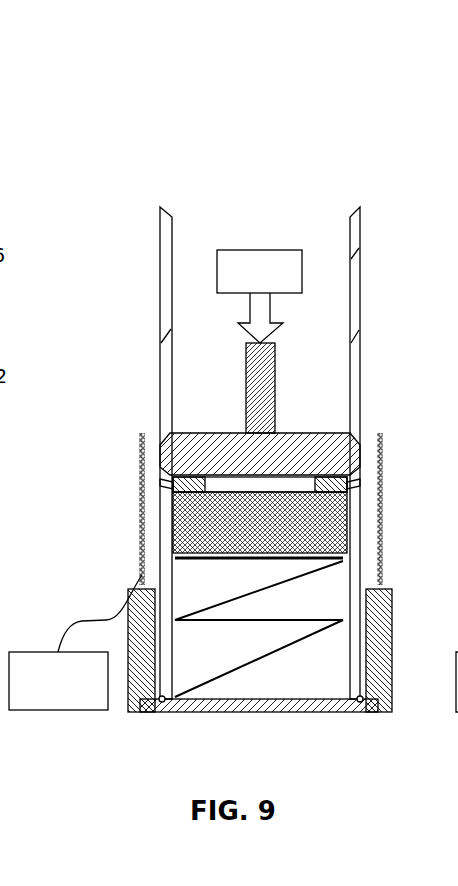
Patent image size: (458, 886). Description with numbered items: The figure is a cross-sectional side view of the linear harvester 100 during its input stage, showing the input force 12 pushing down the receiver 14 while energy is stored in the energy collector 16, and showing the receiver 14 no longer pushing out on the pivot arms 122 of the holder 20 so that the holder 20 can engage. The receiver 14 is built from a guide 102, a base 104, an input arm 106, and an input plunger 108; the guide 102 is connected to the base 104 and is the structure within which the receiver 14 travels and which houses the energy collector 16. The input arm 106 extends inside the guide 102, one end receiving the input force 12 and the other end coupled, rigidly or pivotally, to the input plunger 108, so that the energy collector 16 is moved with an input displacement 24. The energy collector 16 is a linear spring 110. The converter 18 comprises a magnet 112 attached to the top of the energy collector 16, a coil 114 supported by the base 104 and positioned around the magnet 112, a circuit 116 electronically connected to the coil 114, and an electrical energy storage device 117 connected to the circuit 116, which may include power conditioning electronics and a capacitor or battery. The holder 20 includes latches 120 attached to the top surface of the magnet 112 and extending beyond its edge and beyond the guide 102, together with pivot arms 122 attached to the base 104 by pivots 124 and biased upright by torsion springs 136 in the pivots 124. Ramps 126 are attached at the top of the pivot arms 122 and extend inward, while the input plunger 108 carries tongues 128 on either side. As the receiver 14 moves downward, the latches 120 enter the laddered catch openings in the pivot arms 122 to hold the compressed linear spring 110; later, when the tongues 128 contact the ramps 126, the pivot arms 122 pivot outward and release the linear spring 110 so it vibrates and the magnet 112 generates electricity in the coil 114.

The linear harvester 100 is at (212, 158).
The receiver 14 is at (331, 208).
The input force 12 is at (260, 262).
The input displacement 24 is at (252, 302).
The guide 102 is at (348, 298).
The ramps 126 is at (352, 247).
The pivot arms 122 is at (363, 398).
The holder 20 is at (393, 316).
The input arm 106 is at (258, 380).
The input plunger 108 is at (223, 442).
The tongues 128 is at (358, 454).
The latches 120 is at (350, 484).
The magnet 112 is at (185, 507).
The coil 114 is at (142, 522).
The converter 18 is at (101, 562).
The energy collector 16 is at (331, 587).
The linear spring 110 is at (270, 655).
The base 104 is at (370, 711).
The pivots 124 is at (170, 695).
The torsion springs 136 is at (161, 704).
The circuit 116 is at (82, 621).
The electrical energy storage device 117 is at (52, 697).